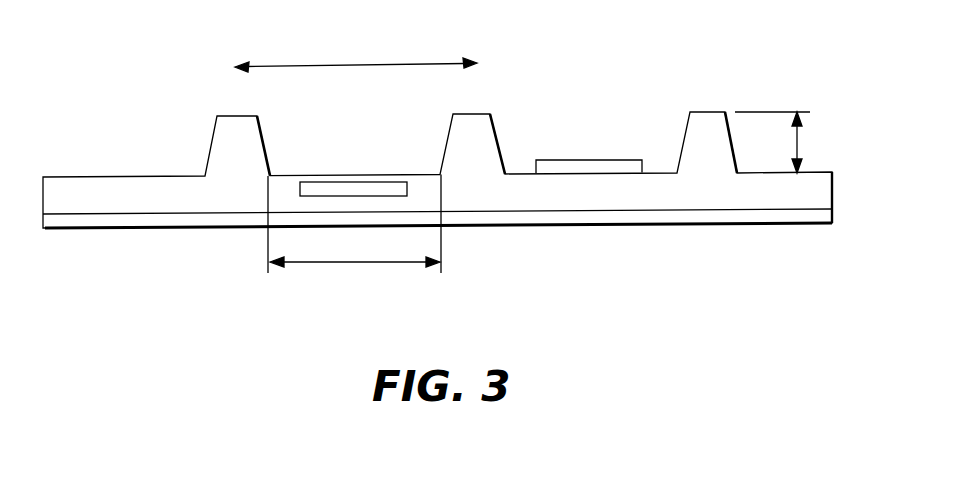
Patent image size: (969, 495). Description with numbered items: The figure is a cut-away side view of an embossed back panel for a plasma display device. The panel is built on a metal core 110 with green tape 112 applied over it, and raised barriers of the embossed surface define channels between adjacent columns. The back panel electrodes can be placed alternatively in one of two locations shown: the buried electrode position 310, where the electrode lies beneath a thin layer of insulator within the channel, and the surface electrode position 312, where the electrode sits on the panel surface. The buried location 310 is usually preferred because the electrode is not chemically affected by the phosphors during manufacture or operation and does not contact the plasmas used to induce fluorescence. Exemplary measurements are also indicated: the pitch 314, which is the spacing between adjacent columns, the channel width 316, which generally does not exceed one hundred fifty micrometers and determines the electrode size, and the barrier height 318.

The metal core 110 is at (712, 225).
The green tape 112 is at (42, 198).
The buried electrode position 310 is at (393, 196).
The surface electrode position 312 is at (587, 158).
The pitch 314 is at (335, 65).
The channel width 316 is at (357, 262).
The barrier height 318 is at (800, 140).